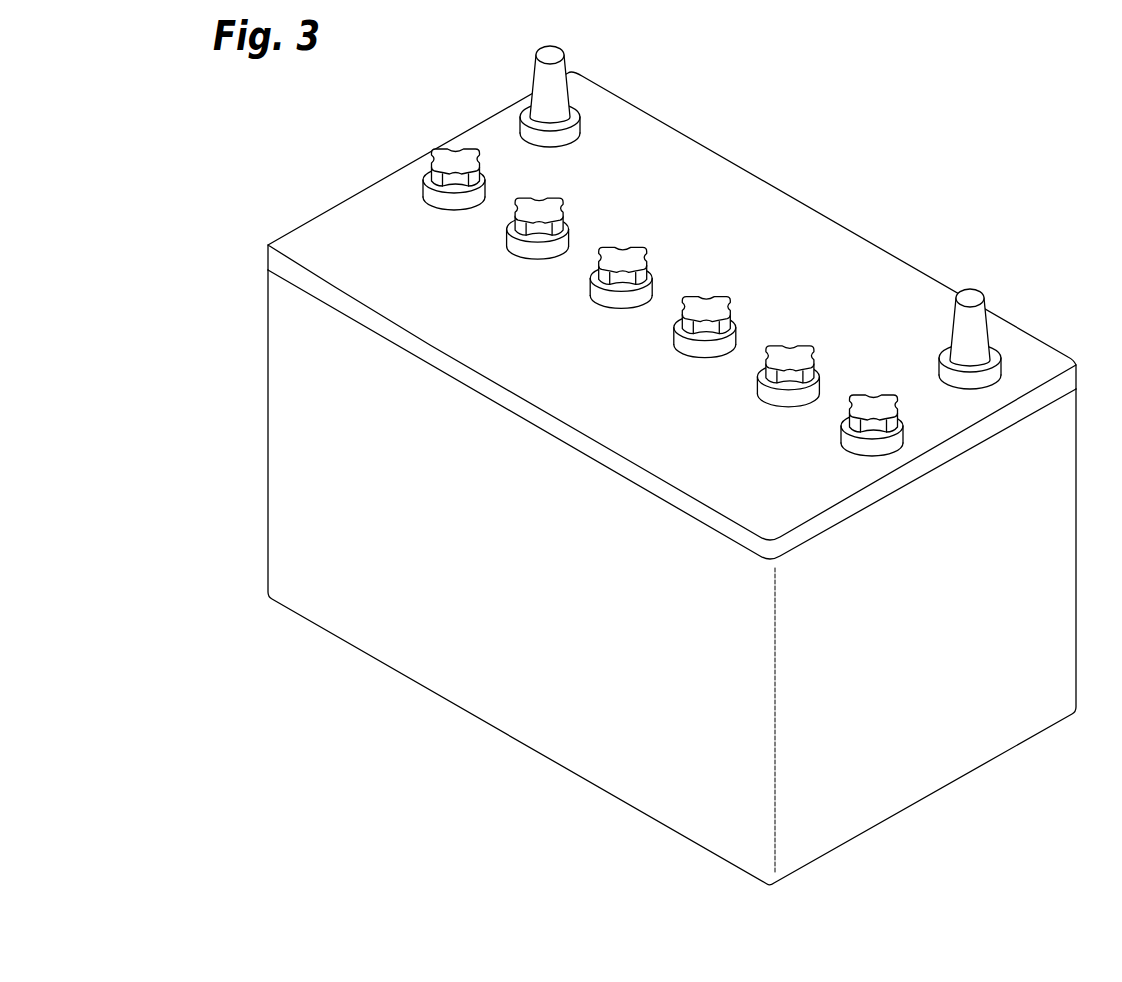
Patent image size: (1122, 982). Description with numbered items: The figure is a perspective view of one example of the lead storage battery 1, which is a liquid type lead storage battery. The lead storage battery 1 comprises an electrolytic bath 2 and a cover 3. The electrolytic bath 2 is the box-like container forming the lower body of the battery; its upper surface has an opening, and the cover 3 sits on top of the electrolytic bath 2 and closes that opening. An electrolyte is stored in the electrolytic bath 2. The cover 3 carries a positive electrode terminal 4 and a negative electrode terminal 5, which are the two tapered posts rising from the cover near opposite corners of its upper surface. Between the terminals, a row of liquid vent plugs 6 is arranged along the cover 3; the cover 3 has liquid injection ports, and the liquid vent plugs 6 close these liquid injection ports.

The lead storage battery 1 is at (619, 464).
The electrolytic bath 2 is at (268, 490).
The cover 3 is at (318, 217).
The positive electrode terminal 4 is at (569, 47).
The negative electrode terminal 5 is at (972, 295).
The liquid vent plugs 6 is at (708, 303).